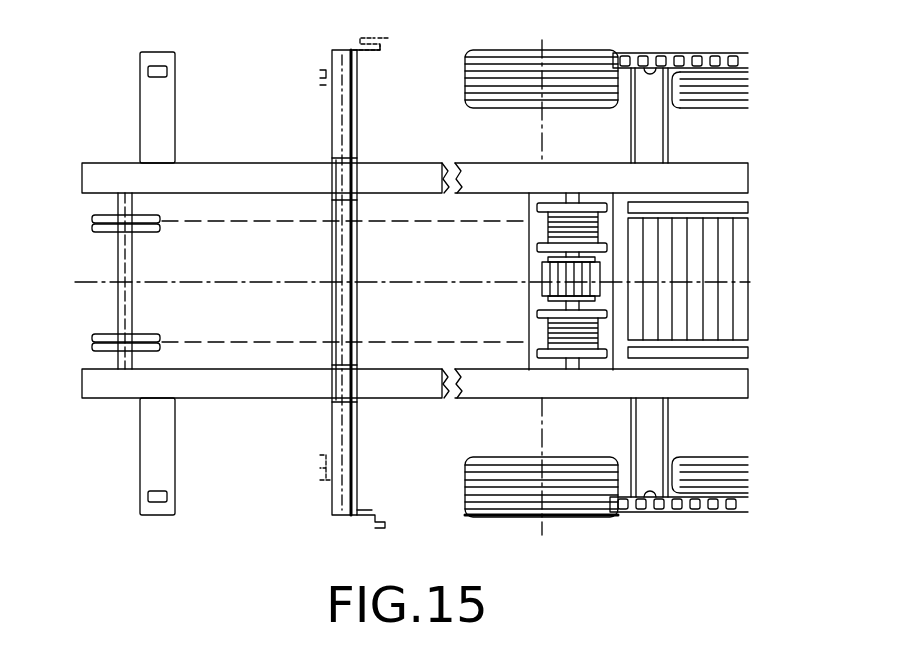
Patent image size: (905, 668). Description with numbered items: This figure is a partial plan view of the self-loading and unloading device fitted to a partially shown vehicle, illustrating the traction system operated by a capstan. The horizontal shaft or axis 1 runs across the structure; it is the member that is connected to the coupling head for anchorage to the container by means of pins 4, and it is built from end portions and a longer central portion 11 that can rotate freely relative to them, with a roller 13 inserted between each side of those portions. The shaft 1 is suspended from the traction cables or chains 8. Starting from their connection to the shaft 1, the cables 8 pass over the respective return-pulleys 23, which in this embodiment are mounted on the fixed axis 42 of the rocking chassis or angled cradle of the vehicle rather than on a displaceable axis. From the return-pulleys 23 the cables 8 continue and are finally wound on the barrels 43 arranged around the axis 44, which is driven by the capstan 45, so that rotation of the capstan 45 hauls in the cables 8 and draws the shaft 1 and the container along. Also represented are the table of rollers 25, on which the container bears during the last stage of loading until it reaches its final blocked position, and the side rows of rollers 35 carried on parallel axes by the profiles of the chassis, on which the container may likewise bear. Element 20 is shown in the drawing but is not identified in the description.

The horizontal shaft or axis 1 is at (325, 108).
The pins 4 is at (326, 72).
The traction cables or chains 8 is at (220, 340).
The central portion 11 is at (338, 236).
The roller 13 is at (340, 392).
The frame beam 20 is at (230, 398).
The return-pulleys 23 is at (93, 223).
The table of rollers 25 is at (710, 305).
The rollers 35 is at (683, 507).
The fixed axis 42 is at (118, 268).
The barrels 43 is at (597, 336).
The axis 44 is at (582, 198).
The capstan 45 is at (544, 267).